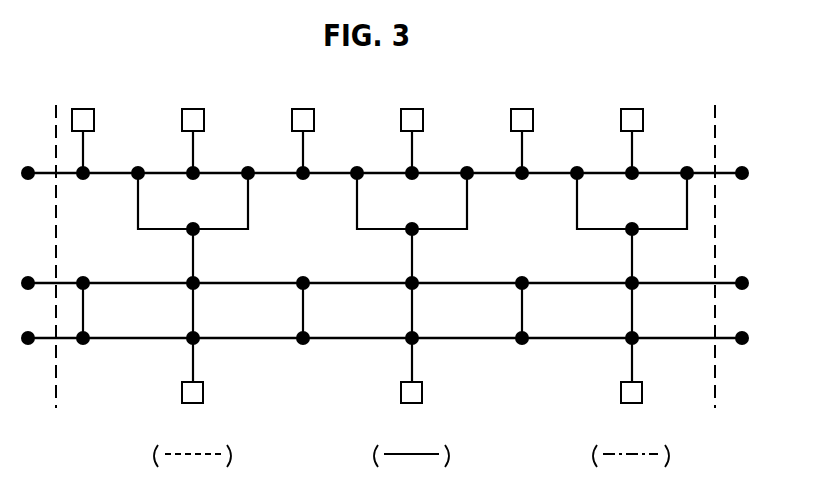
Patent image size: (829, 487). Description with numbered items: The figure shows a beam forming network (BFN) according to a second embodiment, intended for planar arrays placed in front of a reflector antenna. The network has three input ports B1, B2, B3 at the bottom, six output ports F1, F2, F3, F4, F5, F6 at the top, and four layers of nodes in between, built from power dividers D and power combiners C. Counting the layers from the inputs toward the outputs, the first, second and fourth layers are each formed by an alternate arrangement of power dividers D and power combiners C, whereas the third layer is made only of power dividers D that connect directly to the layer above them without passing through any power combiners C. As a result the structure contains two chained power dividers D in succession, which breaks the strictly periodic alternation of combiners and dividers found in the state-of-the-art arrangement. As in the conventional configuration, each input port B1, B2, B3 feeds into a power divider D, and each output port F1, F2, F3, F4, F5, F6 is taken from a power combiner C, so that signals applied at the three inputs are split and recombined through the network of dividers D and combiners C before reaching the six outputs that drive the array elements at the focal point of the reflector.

The output port F1 is at (83, 124).
The output port F2 is at (193, 124).
The output port F3 is at (303, 124).
The output port F4 is at (412, 124).
The output port F5 is at (522, 124).
The output port F6 is at (632, 124).
The input port B1 is at (192, 402).
The input port B2 is at (411, 402).
The input port B3 is at (631, 402).
The power combiner C is at (364, 259).
The power divider D is at (387, 258).